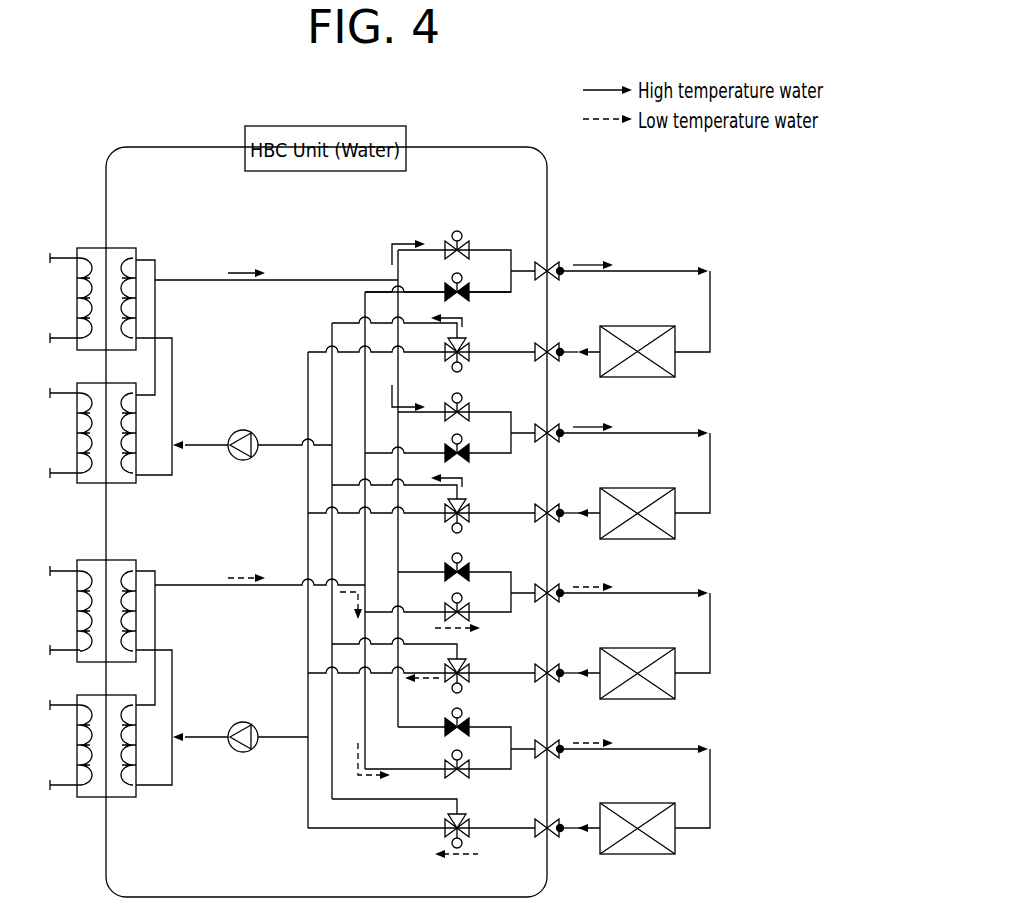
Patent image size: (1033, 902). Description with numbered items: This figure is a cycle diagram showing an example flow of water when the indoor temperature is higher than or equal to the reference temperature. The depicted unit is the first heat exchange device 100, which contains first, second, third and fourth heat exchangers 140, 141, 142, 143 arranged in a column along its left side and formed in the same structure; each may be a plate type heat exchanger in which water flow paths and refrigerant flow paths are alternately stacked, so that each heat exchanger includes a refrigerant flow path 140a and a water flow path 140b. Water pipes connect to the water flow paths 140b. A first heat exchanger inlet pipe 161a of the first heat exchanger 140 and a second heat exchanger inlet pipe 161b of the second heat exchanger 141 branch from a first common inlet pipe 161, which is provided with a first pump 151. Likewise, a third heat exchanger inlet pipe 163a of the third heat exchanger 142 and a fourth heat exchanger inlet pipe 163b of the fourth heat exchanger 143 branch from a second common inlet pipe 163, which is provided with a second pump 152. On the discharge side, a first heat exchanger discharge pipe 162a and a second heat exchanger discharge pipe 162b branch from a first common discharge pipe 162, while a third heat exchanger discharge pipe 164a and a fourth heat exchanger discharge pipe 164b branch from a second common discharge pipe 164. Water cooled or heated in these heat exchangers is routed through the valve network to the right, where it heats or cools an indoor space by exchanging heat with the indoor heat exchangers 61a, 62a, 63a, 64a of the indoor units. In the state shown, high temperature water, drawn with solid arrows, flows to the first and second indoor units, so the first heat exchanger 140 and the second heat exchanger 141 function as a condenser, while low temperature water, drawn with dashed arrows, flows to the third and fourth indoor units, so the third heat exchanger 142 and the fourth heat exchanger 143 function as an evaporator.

The first heat exchange device 100 is at (108, 126).
The first heat exchanger 140 is at (118, 247).
The refrigerant flow path 140a is at (92, 258).
The water flow path 140b is at (114, 260).
The second heat exchanger 141 is at (125, 485).
The third heat exchanger 142 is at (130, 560).
The fourth heat exchanger 143 is at (122, 798).
The first pump 151 is at (235, 430).
The second pump 152 is at (245, 755).
The first common inlet pipe 161 is at (197, 448).
The first heat exchanger inlet pipe 161a is at (150, 336).
The second heat exchanger inlet pipe 161b is at (150, 476).
The first common discharge pipe 162 is at (203, 278).
The first heat exchanger discharge pipe 162a is at (145, 258).
The second heat exchanger discharge pipe 162b is at (157, 298).
The second common inlet pipe 163 is at (200, 742).
The third heat exchanger inlet pipe 163a is at (163, 652).
The fourth heat exchanger inlet pipe 163b is at (160, 795).
The second common discharge pipe 164 is at (190, 588).
The third heat exchanger discharge pipe 164a is at (150, 572).
The fourth heat exchanger discharge pipe 164b is at (160, 706).
The indoor heat exchanger 61a is at (675, 363).
The indoor heat exchanger 62a is at (675, 525).
The indoor heat exchanger 63a is at (675, 686).
The indoor heat exchanger 64a is at (675, 842).